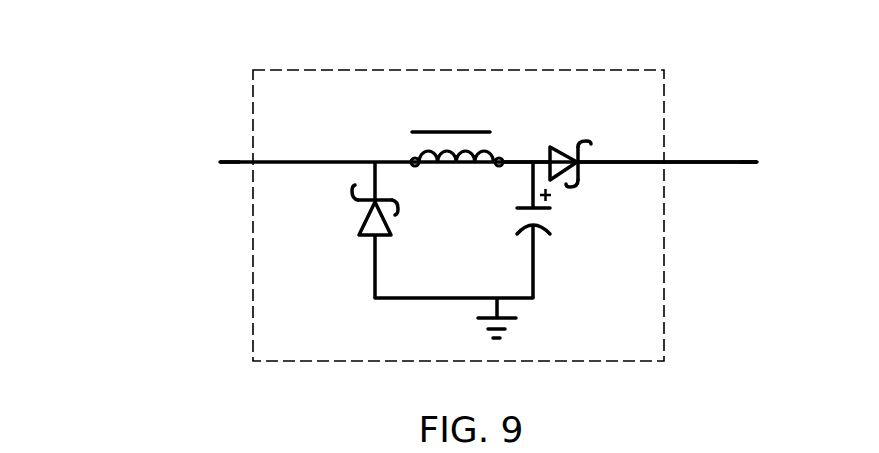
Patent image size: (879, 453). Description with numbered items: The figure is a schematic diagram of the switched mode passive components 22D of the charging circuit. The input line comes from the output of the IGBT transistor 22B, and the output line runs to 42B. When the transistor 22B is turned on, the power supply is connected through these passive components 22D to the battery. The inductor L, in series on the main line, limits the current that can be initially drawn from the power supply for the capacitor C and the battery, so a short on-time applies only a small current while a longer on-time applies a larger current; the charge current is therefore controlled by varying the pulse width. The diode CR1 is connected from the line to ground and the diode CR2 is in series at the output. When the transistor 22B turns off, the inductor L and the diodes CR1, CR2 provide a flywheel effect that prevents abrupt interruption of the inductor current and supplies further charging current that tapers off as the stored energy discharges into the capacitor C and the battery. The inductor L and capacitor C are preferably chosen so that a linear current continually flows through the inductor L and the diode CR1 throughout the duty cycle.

The switched mode passive components 22D is at (432, 66).
The diode CR1 is at (349, 230).
The diode CR2 is at (630, 144).
The inductor L is at (457, 133).
The capacitor C is at (520, 230).
The IGBT transistor 22B is at (133, 162).
The connection to 42B is at (800, 162).